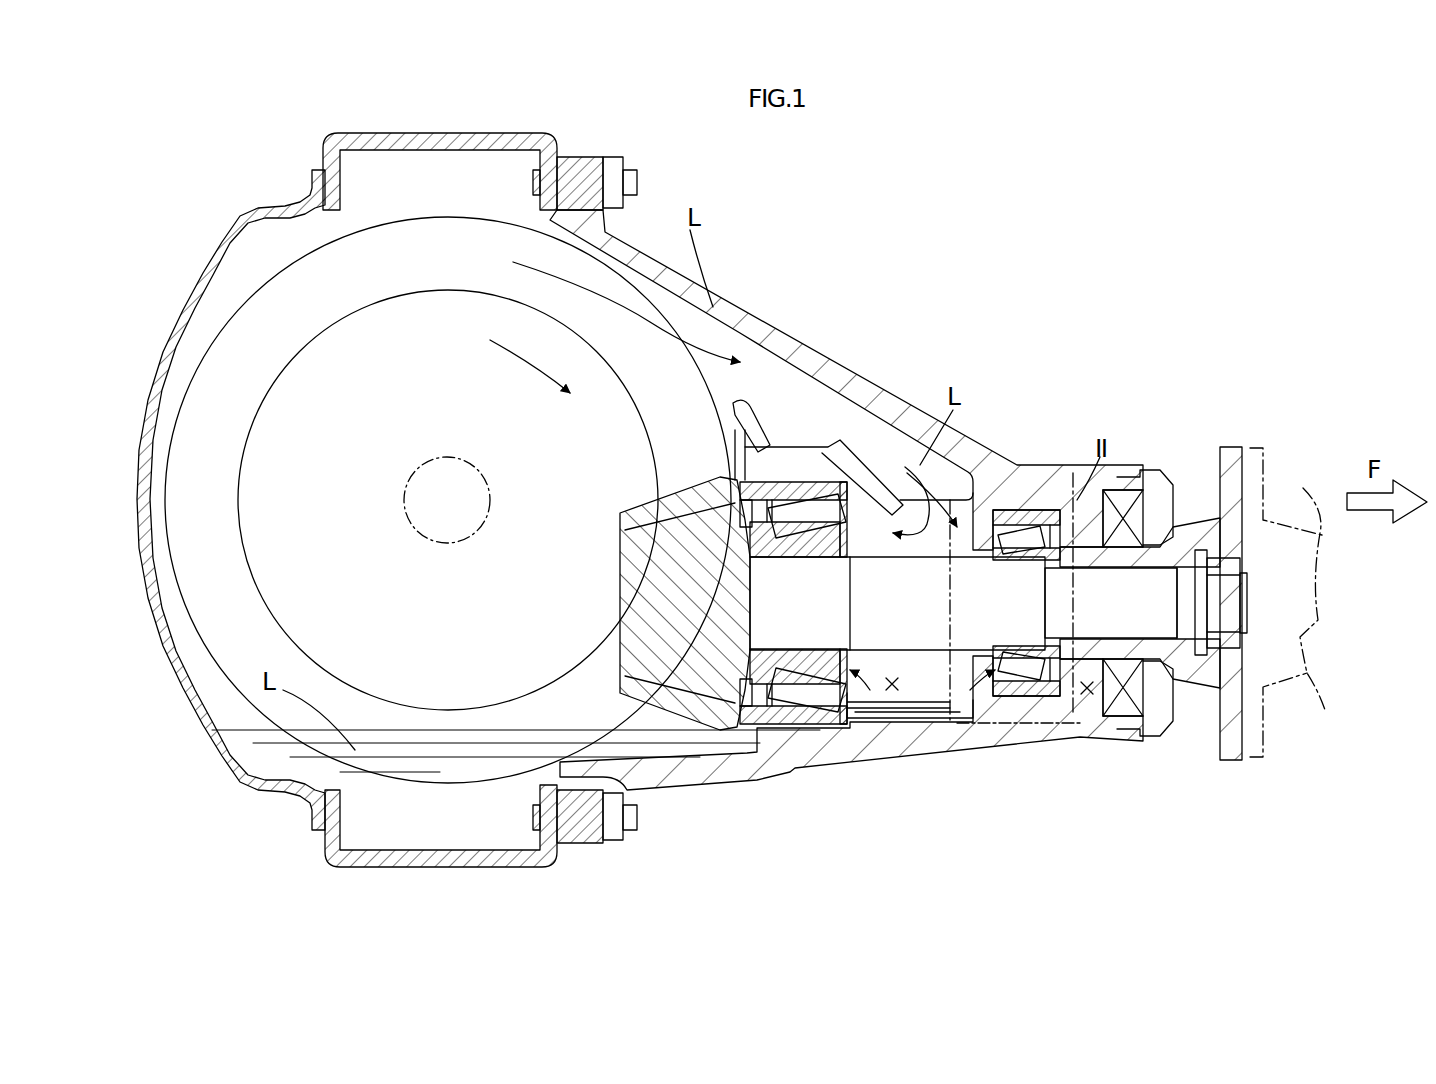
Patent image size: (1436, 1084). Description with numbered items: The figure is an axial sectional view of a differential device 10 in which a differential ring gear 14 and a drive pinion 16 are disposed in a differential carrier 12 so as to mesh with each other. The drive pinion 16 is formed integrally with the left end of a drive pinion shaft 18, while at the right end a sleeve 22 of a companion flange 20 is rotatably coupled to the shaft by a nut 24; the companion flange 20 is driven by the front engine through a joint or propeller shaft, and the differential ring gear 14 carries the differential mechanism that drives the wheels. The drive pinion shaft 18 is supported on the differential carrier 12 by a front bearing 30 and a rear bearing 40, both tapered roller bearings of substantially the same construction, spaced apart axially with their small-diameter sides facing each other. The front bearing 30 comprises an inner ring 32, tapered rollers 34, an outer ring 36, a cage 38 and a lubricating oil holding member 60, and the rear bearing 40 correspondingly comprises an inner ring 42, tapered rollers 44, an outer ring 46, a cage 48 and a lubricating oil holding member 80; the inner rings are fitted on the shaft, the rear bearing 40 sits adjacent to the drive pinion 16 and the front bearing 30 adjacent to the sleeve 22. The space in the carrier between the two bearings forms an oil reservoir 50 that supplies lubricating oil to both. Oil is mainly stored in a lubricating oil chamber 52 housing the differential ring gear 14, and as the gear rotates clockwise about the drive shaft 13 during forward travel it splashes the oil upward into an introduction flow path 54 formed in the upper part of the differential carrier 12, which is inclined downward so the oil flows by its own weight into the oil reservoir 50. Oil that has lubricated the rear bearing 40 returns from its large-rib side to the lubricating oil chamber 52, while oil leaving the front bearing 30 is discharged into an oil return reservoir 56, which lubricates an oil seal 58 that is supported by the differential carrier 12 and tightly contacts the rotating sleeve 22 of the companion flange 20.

The differential device 10 is at (1000, 243).
The differential carrier 12 is at (633, 247).
The drive shaft 13 is at (430, 460).
The differential ring gear 14 is at (408, 250).
The drive pinion 16 is at (642, 520).
The drive pinion shaft 18 is at (912, 650).
The companion flange 20 is at (1227, 453).
The sleeve 22 is at (1180, 662).
The nut 24 is at (1227, 622).
The front bearing 30 is at (1037, 497).
The inner ring 32 is at (1057, 548).
The tapered rollers 34 is at (1033, 528).
The outer ring 36 is at (1007, 520).
The cage 38 is at (1003, 512).
The rear bearing 40 is at (836, 461).
The inner ring 42 is at (785, 490).
The tapered rollers 44 is at (800, 507).
The outer ring 46 is at (833, 497).
The cage 48 is at (840, 500).
The oil reservoir 50 is at (892, 692).
The lubricating oil chamber 52 is at (400, 835).
The introduction flow path 54 is at (747, 395).
The oil return reservoir 56 is at (1087, 696).
The oil seal 58 is at (1120, 507).
The lubricating oil holding member 60 is at (1080, 490).
The lubricating oil holding member 80 is at (757, 487).